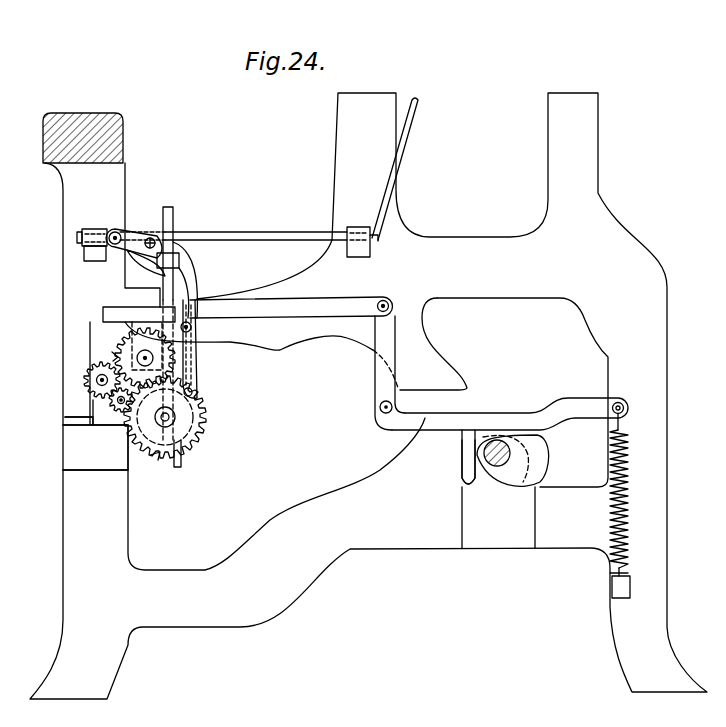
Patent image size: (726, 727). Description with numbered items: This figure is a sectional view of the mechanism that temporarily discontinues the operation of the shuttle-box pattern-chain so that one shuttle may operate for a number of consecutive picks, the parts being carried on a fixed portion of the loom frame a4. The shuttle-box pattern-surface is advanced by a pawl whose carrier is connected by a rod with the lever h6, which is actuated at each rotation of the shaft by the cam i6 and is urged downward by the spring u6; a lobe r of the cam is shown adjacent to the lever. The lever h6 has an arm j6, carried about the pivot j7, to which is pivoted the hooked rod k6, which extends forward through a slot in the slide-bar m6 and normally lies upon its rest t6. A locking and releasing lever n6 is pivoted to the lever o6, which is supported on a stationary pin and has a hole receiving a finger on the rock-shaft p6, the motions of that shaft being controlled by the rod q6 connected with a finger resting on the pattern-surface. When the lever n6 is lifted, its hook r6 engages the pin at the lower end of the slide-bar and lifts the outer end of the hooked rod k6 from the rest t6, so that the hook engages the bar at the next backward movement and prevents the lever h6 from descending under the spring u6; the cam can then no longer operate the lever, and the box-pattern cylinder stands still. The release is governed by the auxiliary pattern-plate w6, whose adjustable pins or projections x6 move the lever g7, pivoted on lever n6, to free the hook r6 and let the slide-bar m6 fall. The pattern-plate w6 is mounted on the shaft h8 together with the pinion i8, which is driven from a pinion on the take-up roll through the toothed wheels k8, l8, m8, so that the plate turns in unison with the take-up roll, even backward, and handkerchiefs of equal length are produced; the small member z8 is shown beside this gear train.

The frame head a4 is at (83, 128).
The lever o6 is at (122, 235).
The rock-shaft p6 is at (258, 233).
The rod q6 is at (399, 172).
The slide-bar m6 is at (174, 222).
The locking and releasing lever n6 is at (198, 266).
The hooked rod k6 is at (291, 307).
The rest t6 is at (120, 343).
The pawl z8 is at (112, 356).
The toothed wheel k8 is at (86, 380).
The toothed wheel l8 is at (114, 403).
The toothed wheel m8 is at (89, 423).
The shaft h8 is at (125, 443).
The auxiliary pattern-plate w6 is at (206, 420).
The pinion i8 is at (163, 423).
The pattern pins or projections x6 is at (153, 457).
The hook r6 is at (200, 398).
The lever g7 is at (182, 464).
The arm j6 is at (390, 373).
The pivot j7 is at (378, 408).
The lever h6 is at (510, 414).
The cam i6 is at (513, 460).
The cam lobe r is at (480, 452).
The spring u6 is at (629, 506).